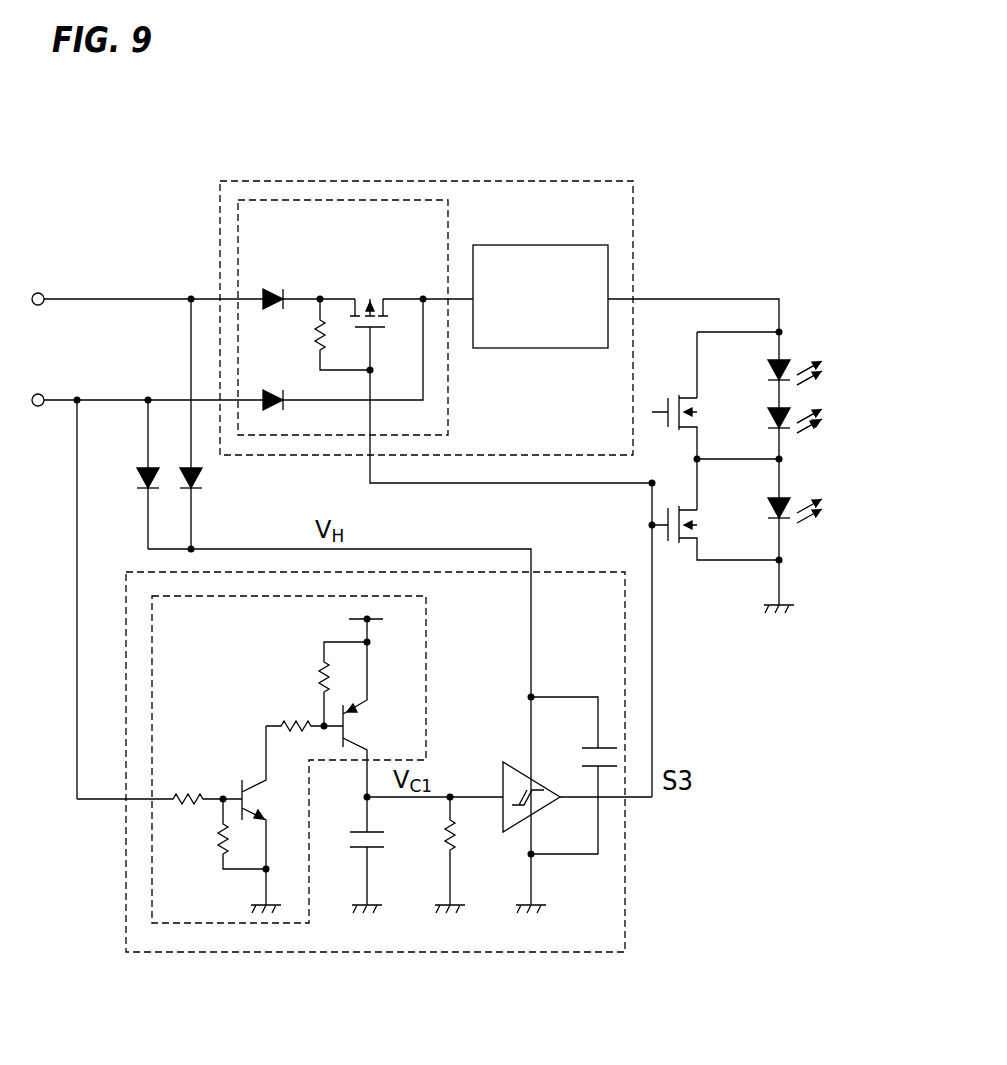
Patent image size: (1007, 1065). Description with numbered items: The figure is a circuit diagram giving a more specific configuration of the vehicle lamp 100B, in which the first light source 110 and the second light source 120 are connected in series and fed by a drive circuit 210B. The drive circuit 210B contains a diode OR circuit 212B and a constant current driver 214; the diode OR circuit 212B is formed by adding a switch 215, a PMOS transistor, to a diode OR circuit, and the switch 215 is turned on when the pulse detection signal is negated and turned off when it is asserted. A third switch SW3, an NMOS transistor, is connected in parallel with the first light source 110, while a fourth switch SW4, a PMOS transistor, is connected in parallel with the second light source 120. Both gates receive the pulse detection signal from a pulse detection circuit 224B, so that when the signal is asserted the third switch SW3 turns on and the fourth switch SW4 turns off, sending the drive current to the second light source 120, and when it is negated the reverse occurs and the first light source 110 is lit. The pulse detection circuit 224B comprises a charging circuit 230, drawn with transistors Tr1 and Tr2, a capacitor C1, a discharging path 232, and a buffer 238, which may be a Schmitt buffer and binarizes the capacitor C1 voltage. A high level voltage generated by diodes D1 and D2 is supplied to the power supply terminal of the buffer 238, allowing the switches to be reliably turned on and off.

The vehicle lamp 100B is at (786, 185).
The drive circuit 210B is at (547, 181).
The diode OR circuit 212B is at (449, 403).
The constant current driver 214 is at (547, 245).
The switch 215 is at (365, 293).
The second light source 120 is at (806, 352).
The first light source 110 is at (806, 492).
The fourth switch SW4 is at (708, 418).
The third switch SW3 is at (704, 528).
The diode D1 is at (130, 478).
The diode D2 is at (205, 478).
The pulse detection circuit 224B is at (253, 952).
The charging circuit 230 is at (430, 663).
The transistor Tr1 is at (183, 815).
The transistor Tr2 is at (331, 708).
The capacitor C1 is at (351, 851).
The discharging path 232 is at (437, 845).
The buffer 238 is at (503, 815).